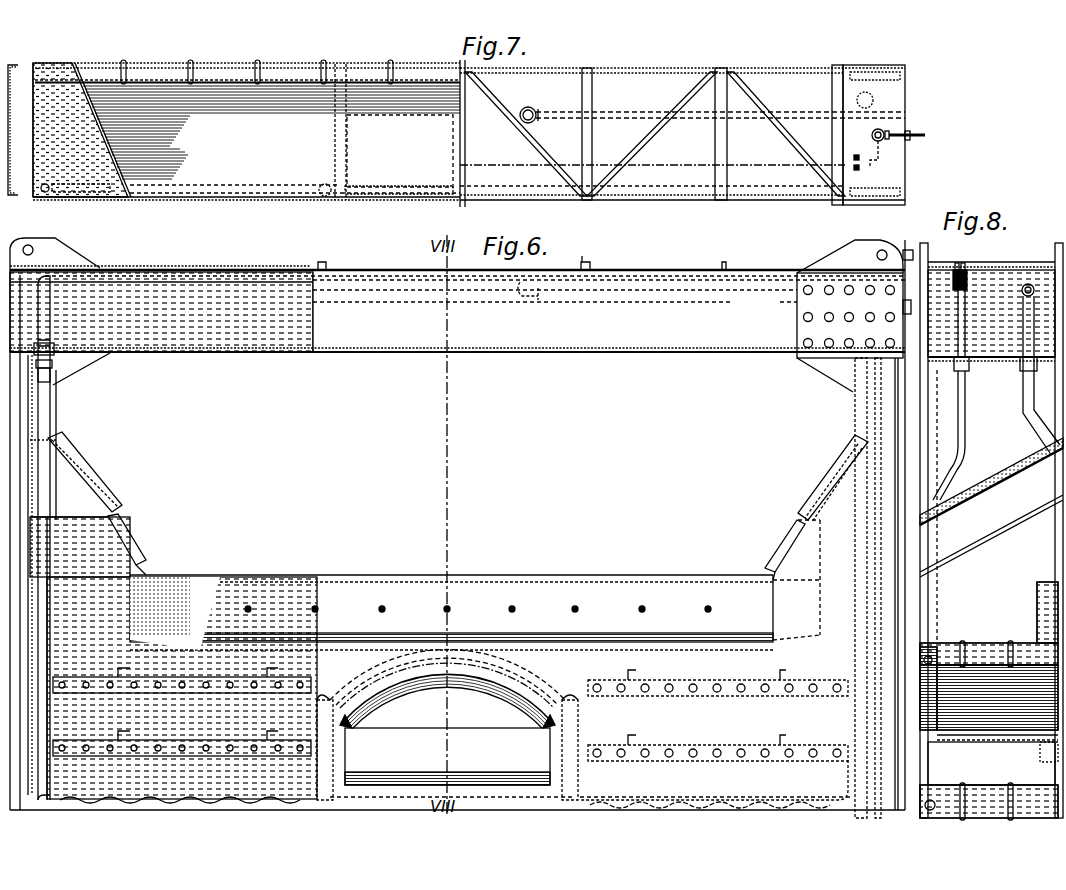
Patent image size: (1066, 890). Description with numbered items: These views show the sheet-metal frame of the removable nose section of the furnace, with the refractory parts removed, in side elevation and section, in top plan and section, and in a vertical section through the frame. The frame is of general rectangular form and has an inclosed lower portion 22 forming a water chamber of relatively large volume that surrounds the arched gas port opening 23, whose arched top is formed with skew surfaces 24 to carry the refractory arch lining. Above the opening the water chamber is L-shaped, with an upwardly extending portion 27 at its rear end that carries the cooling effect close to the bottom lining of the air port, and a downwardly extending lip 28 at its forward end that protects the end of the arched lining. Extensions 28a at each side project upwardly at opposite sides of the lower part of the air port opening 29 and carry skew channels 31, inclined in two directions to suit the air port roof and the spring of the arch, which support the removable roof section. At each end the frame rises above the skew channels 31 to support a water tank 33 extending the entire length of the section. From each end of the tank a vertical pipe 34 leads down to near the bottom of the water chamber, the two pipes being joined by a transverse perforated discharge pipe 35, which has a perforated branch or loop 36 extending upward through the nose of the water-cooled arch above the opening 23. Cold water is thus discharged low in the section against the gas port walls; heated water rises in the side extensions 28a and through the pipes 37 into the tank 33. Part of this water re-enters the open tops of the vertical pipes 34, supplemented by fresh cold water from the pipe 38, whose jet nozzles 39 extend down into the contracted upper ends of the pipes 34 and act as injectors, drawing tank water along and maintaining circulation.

In FIG. 6, the inclosed lower portion 22 is at (489, 782).
In FIG. 6, the arched gas port opening 23 is at (447, 756).
In FIG. 8, the arched gas port opening 23 is at (993, 763).
In FIG. 6, the skew surfaces 24 is at (348, 712).
In FIG. 8, the skew surfaces 24 is at (1032, 718).
In FIG. 7, the upwardly extending portion 27 is at (303, 71).
In FIG. 6, the upwardly extending portion 27 is at (451, 612).
In FIG. 8, the upwardly extending portion 27 is at (1037, 603).
In FIG. 6, the downwardly extending lip 28 is at (476, 683).
In FIG. 8, the downwardly extending lip 28 is at (950, 690).
In FIG. 7, the extensions 28a is at (271, 132).
In FIG. 6, the extensions 28a is at (143, 560).
In FIG. 7, the air port opening 29 is at (397, 133).
In FIG. 6, the air port opening 29 is at (467, 529).
In FIG. 8, the air port opening 29 is at (991, 505).
In FIG. 6, the skew channels 31 is at (120, 525).
In FIG. 8, the skew channels 31 is at (991, 481).
In FIG. 7, the water tank 33 is at (673, 192).
In FIG. 6, the water tank 33 is at (264, 320).
In FIG. 8, the water tank 33 is at (1003, 350).
In FIG. 7, the vertical pipe 34 is at (45, 193).
In FIG. 6, the vertical pipe 34 is at (52, 393).
In FIG. 8, the vertical pipe 34 is at (955, 462).
In FIG. 7, the perforated discharge pipe 35 is at (110, 192).
In FIG. 6, the perforated discharge pipe 35 is at (190, 802).
In FIG. 8, the perforated discharge pipe 35 is at (945, 795).
In FIG. 7, the perforated branch or loop 36 is at (405, 192).
In FIG. 6, the perforated branch or loop 36 is at (362, 683).
In FIG. 8, the perforated branch or loop 36 is at (935, 660).
In FIG. 6, the pipes 37 is at (50, 320).
In FIG. 8, the pipes 37 is at (1025, 420).
In FIG. 7, the pipe 38 is at (694, 128).
In FIG. 6, the pipe 38 is at (208, 280).
In FIG. 8, the pipe 38 is at (966, 280).
In FIG. 6, the jet nozzles 39 is at (52, 364).